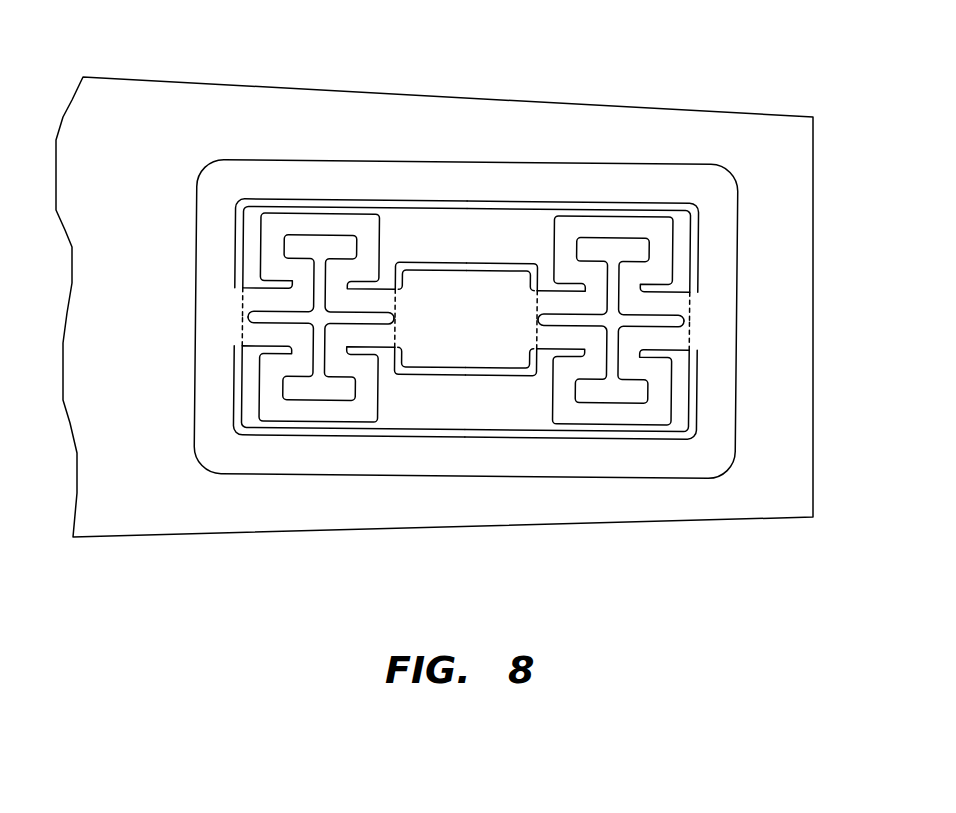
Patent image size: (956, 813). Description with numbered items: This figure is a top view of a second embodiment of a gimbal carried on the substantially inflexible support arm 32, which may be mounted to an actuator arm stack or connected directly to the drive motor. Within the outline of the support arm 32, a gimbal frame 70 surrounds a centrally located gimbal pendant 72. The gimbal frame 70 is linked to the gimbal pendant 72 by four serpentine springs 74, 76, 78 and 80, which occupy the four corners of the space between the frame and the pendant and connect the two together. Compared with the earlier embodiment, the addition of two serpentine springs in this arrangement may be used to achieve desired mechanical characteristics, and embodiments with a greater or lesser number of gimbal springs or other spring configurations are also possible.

The support arm 32 is at (125, 108).
The gimbal frame 70 is at (583, 183).
The gimbal pendant 72 is at (463, 317).
The serpentine spring 74 is at (638, 227).
The serpentine spring 76 is at (615, 415).
The serpentine spring 78 is at (288, 410).
The serpentine spring 80 is at (308, 227).